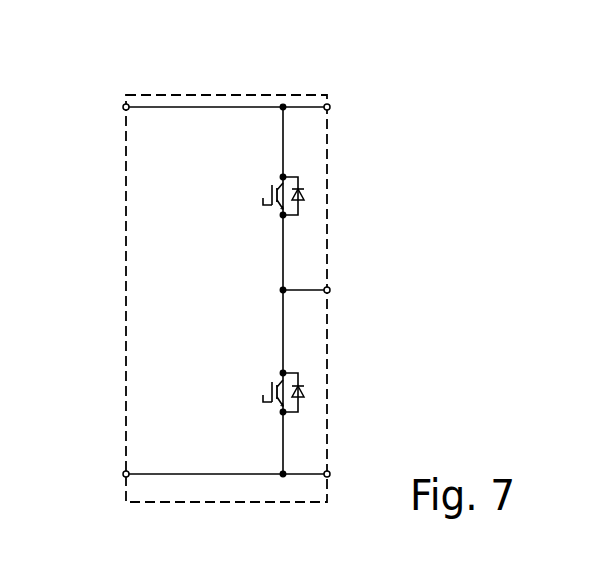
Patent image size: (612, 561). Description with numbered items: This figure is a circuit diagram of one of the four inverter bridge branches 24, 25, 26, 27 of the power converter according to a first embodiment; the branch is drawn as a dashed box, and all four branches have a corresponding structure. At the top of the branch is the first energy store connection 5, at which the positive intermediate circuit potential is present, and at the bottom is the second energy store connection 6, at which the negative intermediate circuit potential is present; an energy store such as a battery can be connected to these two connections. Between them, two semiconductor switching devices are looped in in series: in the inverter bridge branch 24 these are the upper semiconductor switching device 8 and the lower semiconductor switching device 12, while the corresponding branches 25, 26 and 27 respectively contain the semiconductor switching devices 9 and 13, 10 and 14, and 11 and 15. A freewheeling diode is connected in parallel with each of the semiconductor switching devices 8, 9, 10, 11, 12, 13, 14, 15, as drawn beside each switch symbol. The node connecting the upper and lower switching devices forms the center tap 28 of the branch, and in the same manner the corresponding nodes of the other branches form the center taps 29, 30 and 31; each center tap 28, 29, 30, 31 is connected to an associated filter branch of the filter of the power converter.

The first energy store connection 5 is at (123, 107).
The second energy store connection 6 is at (123, 474).
The semiconductor switching device 8 is at (365, 196).
The semiconductor switching device 9 is at (365, 196).
The semiconductor switching device 10 is at (365, 196).
The semiconductor switching device 11 is at (308, 195).
The semiconductor switching device 12 is at (381, 392).
The semiconductor switching device 13 is at (381, 392).
The semiconductor switching device 14 is at (381, 392).
The semiconductor switching device 15 is at (308, 383).
The inverter bridge branch 24 is at (255, 260).
The inverter bridge branch 25 is at (255, 260).
The inverter bridge branch 26 is at (255, 260).
The inverter bridge branch 27 is at (262, 95).
The center tap 28 is at (403, 290).
The center tap 29 is at (403, 290).
The center tap 30 is at (403, 290).
The center tap 31 is at (330, 290).